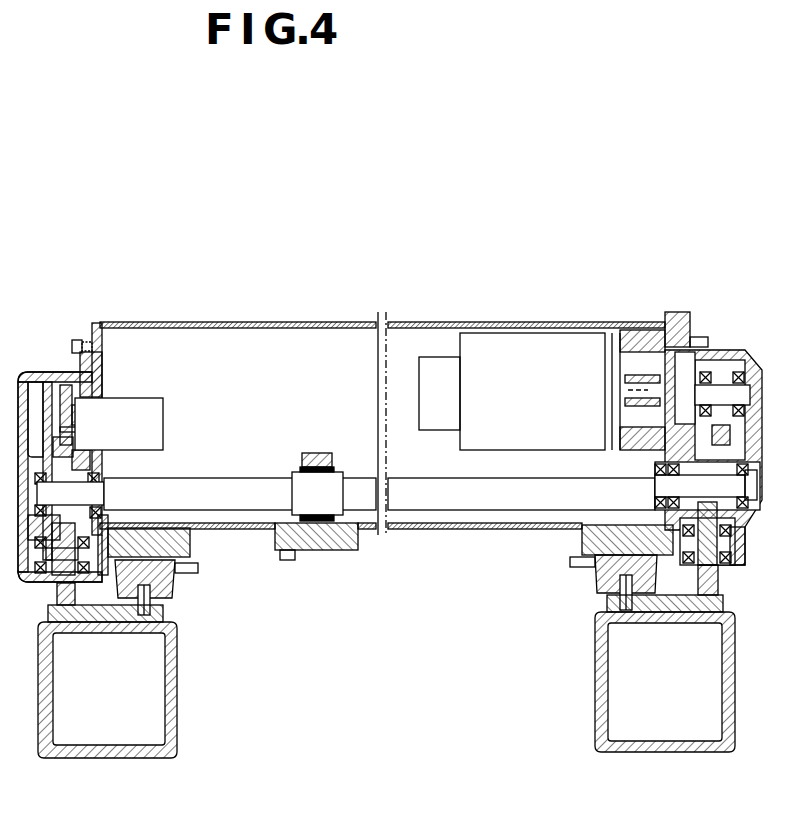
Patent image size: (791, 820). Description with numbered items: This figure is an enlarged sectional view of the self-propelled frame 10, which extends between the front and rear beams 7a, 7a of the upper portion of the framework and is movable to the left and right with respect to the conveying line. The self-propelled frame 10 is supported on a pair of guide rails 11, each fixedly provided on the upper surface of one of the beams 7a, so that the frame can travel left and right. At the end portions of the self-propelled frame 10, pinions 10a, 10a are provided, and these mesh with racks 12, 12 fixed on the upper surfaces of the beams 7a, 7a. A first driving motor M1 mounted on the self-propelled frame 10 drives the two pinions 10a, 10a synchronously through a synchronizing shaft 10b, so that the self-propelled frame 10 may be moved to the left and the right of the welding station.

The self-propelled frame 10 is at (313, 322).
The first driving motor M1 is at (528, 345).
The synchronizing shaft 10b is at (452, 493).
The guide rail 11 is at (176, 585).
The rack 12 is at (78, 587).
The pinion 10a is at (82, 565).
The beam 7a is at (177, 672).